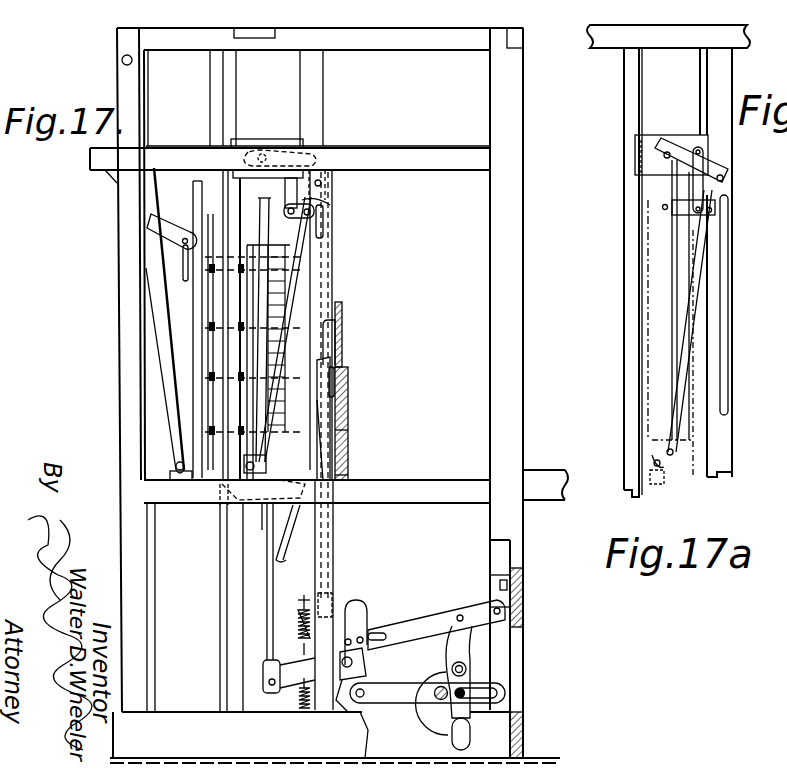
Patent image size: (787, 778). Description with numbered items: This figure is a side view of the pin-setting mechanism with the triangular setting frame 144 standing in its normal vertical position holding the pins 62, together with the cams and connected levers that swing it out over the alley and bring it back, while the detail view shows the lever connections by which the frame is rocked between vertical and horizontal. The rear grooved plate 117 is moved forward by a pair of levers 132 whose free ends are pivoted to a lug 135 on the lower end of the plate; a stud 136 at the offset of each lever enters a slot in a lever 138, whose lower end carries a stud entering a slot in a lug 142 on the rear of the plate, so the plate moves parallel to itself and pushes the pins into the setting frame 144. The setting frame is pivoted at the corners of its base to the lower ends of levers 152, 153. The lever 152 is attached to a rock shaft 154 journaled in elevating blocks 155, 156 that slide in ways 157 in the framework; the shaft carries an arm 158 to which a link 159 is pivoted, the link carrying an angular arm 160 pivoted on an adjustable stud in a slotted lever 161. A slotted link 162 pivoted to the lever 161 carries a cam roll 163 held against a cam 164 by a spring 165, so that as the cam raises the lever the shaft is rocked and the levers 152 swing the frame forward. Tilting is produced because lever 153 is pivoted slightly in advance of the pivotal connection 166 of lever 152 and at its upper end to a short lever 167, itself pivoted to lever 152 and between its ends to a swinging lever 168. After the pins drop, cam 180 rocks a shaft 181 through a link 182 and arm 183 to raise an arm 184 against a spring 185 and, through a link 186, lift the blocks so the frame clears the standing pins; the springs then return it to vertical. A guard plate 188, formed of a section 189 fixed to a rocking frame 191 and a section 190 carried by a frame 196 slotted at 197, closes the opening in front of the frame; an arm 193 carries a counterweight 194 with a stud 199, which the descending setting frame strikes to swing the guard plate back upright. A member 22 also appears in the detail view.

In FIG. 17A, the frame member 22 is at (773, 295).
In FIG. 17, the pins 62 is at (195, 313).
In FIG. 17, the rear grooved plate 117 is at (206, 376).
In FIG. 17, the levers 132 is at (163, 418).
In FIG. 17, the lug 135 is at (185, 480).
In FIG. 17, the stud 136 is at (178, 468).
In FIG. 17, the lever 138 is at (172, 222).
In FIG. 17, the lug 142 is at (184, 284).
In FIG. 17, the setting frame 144 is at (303, 276).
In FIG. 17A, the setting frame 144 is at (645, 282).
In FIG. 17, the lever 152 is at (300, 358).
In FIG. 17A, the lever 152 is at (655, 410).
In FIG. 17, the lever 153 is at (300, 337).
In FIG. 17A, the lever 153 is at (680, 413).
In FIG. 17A, the rock shaft 154 is at (668, 157).
In FIG. 17, the elevating block 155 is at (262, 140).
In FIG. 17A, the elevating block 156 is at (648, 142).
In FIG. 17A, the ways 157 is at (633, 95).
In FIG. 17A, the arm 158 is at (706, 168).
In FIG. 17, the link 159 is at (324, 220).
In FIG. 17A, the link 159 is at (729, 340).
In FIG. 17, the angular arm 160 is at (349, 610).
In FIG. 17, the slotted lever 161 is at (414, 626).
In FIG. 17, the slotted link 162 is at (465, 636).
In FIG. 17, the cam roll 163 is at (468, 670).
In FIG. 17, the cam 164 is at (440, 716).
In FIG. 17, the spring 165 is at (298, 630).
In FIG. 17A, the pivotal connection 166 is at (655, 465).
In FIG. 17A, the short lever 167 is at (680, 213).
In FIG. 17A, the swinging lever 168 is at (716, 203).
In FIG. 17, the cam 180 is at (470, 722).
In FIG. 17, the shaft 181 is at (368, 660).
In FIG. 17, the link 182 is at (504, 692).
In FIG. 17, the arm 183 is at (367, 675).
In FIG. 17, the arm 184 is at (296, 664).
In FIG. 17, the spring 185 is at (303, 712).
In FIG. 17, the link 186 is at (274, 580).
In FIG. 17, the guard plate 188 is at (343, 402).
In FIG. 17, the guard plate section 189 is at (342, 316).
In FIG. 17, the guard plate section 190 is at (346, 472).
In FIG. 17, the rocking frame 191 is at (323, 413).
In FIG. 17, the arm 193 is at (296, 523).
In FIG. 17, the counterweight 194 is at (262, 520).
In FIG. 17, the frame 196 is at (346, 440).
In FIG. 17, the slot 197 is at (336, 388).
In FIG. 17, the stud 199 is at (216, 512).